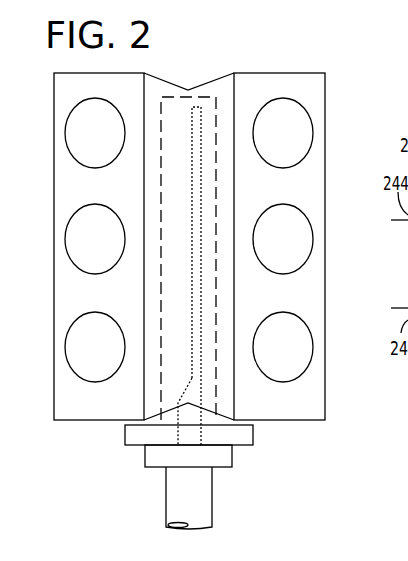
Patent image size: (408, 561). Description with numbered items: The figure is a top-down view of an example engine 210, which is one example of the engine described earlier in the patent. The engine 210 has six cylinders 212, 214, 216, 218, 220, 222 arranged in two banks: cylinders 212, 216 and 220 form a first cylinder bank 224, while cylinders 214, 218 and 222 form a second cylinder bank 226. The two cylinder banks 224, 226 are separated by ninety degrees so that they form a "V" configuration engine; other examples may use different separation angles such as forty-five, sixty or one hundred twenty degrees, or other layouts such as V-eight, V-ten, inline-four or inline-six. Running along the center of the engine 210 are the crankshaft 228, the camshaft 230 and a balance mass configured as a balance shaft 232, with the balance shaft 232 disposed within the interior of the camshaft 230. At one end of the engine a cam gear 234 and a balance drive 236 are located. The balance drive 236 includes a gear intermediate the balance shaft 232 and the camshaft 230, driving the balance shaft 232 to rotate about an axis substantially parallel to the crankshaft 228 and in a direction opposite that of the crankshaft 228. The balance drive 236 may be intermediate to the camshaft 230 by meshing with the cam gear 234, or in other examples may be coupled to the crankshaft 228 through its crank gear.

The engine 210 is at (269, 52).
The cylinder 212 is at (81, 140).
The cylinder 214 is at (269, 140).
The cylinder 216 is at (81, 246).
The cylinder 218 is at (269, 246).
The cylinder 220 is at (81, 354).
The cylinder 222 is at (269, 354).
The first cylinder bank 224 is at (52, 121).
The second cylinder bank 226 is at (328, 122).
The crankshaft 228 is at (212, 515).
The camshaft 230 is at (217, 373).
The balance shaft 232 is at (200, 382).
The cam gear 234 is at (124, 437).
The balance drive 236 is at (144, 458).